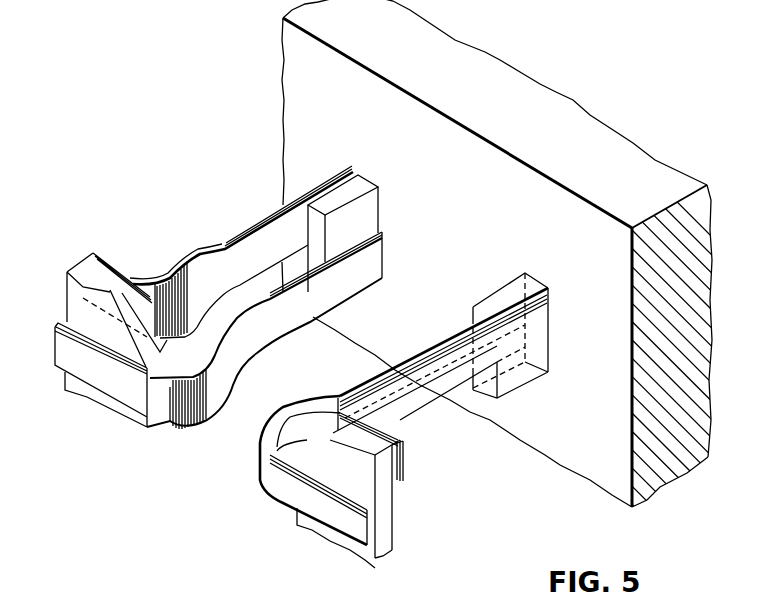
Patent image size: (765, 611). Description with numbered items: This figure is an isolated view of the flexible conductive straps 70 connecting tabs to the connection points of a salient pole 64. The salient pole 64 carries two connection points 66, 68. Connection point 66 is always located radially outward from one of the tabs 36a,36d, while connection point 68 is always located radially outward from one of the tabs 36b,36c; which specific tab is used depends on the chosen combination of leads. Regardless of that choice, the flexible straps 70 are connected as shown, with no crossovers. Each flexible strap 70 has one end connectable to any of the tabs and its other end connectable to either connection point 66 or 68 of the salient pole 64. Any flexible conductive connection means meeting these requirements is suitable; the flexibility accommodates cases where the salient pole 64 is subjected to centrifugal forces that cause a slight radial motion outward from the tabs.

The salient pole 64 is at (585, 115).
The connection point 66 is at (368, 212).
The connection point 68 is at (518, 284).
The flexible conductive strap 70 is at (245, 232).
The tabs 36a,36d is at (68, 278).
The tabs 36b,36c is at (387, 549).